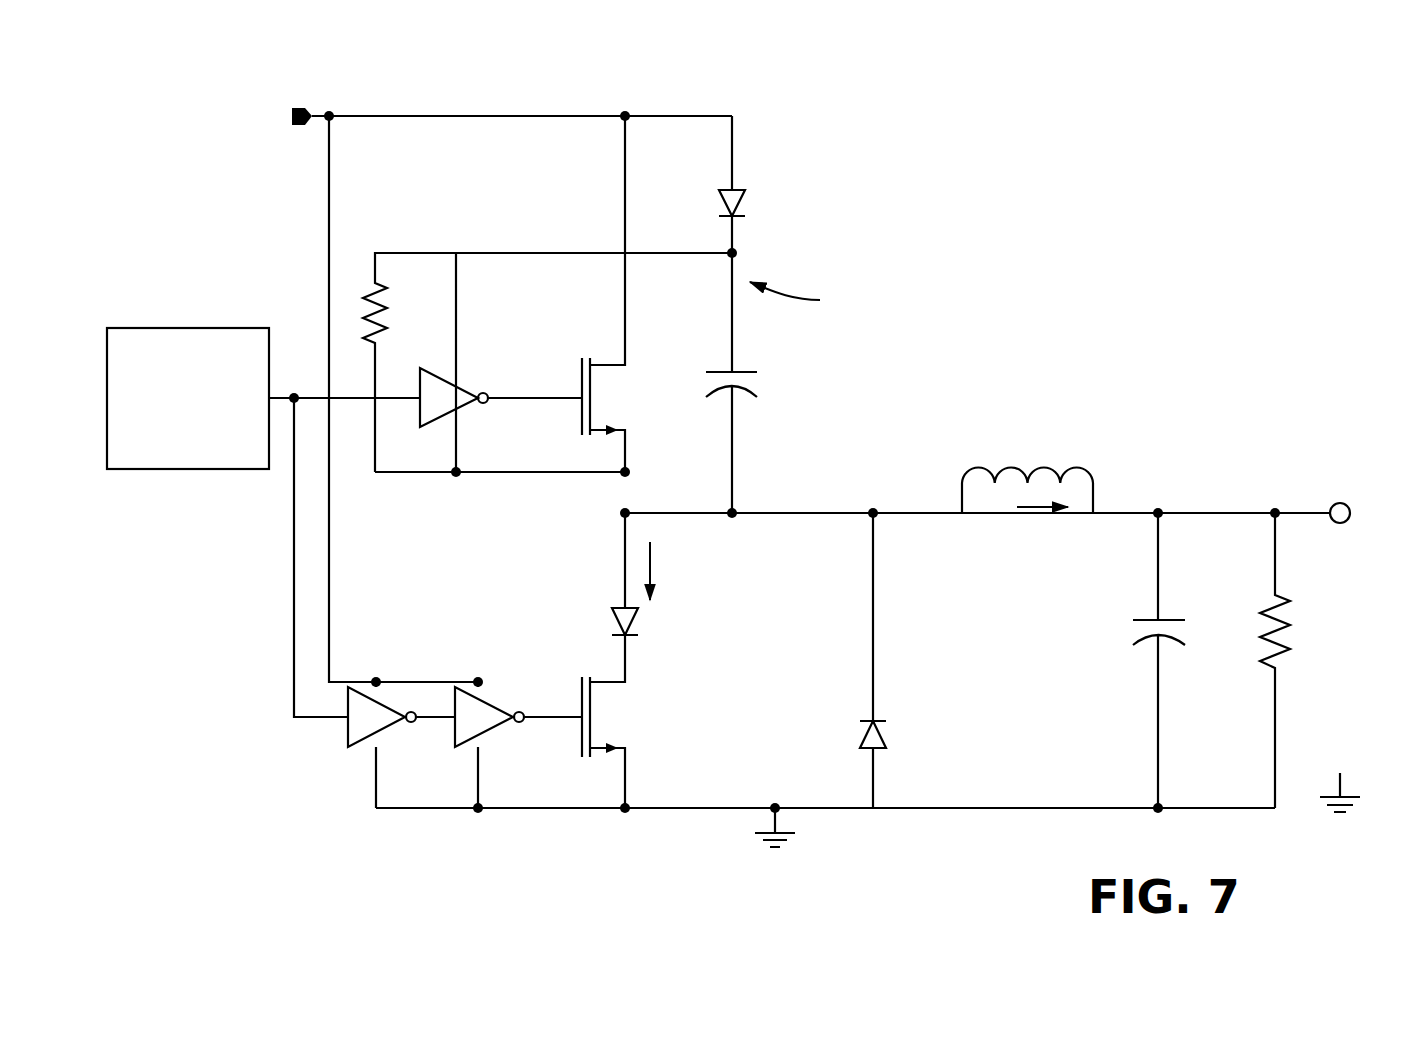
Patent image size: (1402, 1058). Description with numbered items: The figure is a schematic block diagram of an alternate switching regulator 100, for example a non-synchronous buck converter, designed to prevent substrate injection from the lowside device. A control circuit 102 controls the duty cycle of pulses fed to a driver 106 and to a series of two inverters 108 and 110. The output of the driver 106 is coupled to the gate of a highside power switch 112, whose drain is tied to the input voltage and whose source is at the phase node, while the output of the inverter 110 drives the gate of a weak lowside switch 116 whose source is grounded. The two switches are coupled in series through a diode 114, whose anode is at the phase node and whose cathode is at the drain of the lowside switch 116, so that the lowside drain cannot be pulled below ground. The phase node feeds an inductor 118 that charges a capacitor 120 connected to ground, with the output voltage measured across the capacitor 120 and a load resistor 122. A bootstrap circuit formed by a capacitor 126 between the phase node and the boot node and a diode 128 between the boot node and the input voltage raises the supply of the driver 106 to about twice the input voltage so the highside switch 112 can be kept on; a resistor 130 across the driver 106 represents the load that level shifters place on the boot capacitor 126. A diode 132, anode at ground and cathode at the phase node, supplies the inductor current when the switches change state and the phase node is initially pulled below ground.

The switching regulator 100 is at (1037, 178).
The control circuit 102 is at (178, 327).
The driver 106 is at (465, 371).
The inverter 108 is at (377, 648).
The inverter 110 is at (484, 666).
The highside power switch 112 is at (598, 396).
The diode 114 is at (605, 589).
The weak lowside switch 116 is at (629, 705).
The inductor 118 is at (1020, 453).
The capacitor 120 is at (1120, 616).
The load resistor 122 is at (1257, 603).
The capacitor 126 is at (774, 384).
The diode 128 is at (771, 162).
The resistor 130 is at (355, 286).
The diode 132 is at (912, 689).